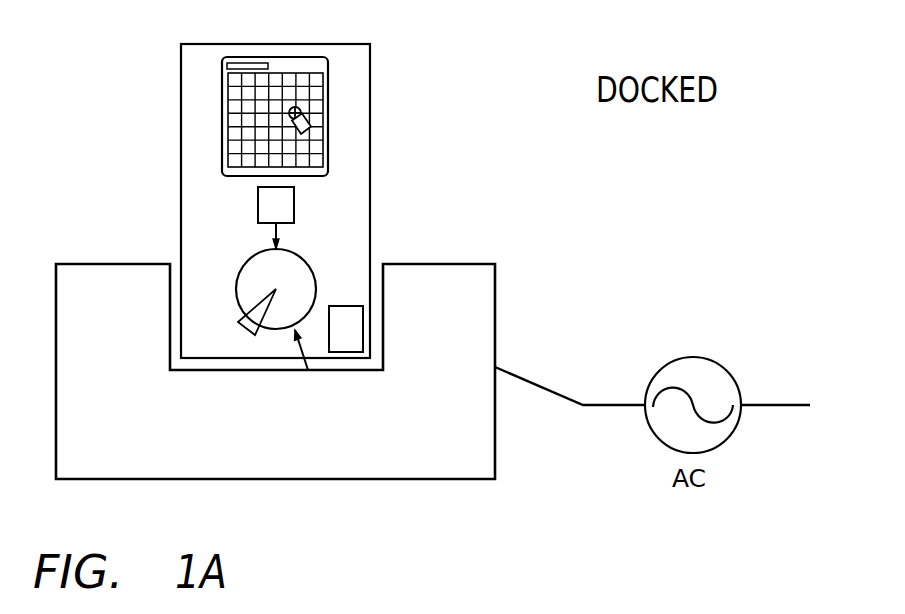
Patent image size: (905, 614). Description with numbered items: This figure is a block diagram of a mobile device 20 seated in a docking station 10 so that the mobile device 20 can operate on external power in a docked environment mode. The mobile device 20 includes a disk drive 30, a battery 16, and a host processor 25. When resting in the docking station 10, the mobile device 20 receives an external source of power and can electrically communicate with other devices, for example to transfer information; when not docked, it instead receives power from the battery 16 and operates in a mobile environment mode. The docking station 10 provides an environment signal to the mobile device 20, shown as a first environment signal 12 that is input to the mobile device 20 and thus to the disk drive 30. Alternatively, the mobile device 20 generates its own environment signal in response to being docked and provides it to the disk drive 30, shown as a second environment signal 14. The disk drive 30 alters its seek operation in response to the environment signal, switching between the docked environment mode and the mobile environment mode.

The docking station 10 is at (453, 265).
The first environment signal 12 is at (300, 350).
The second environment signal 14 is at (277, 232).
The battery 16 is at (343, 333).
The mobile device 20 is at (320, 44).
The host processor 25 is at (294, 203).
The disk drive 30 is at (242, 267).